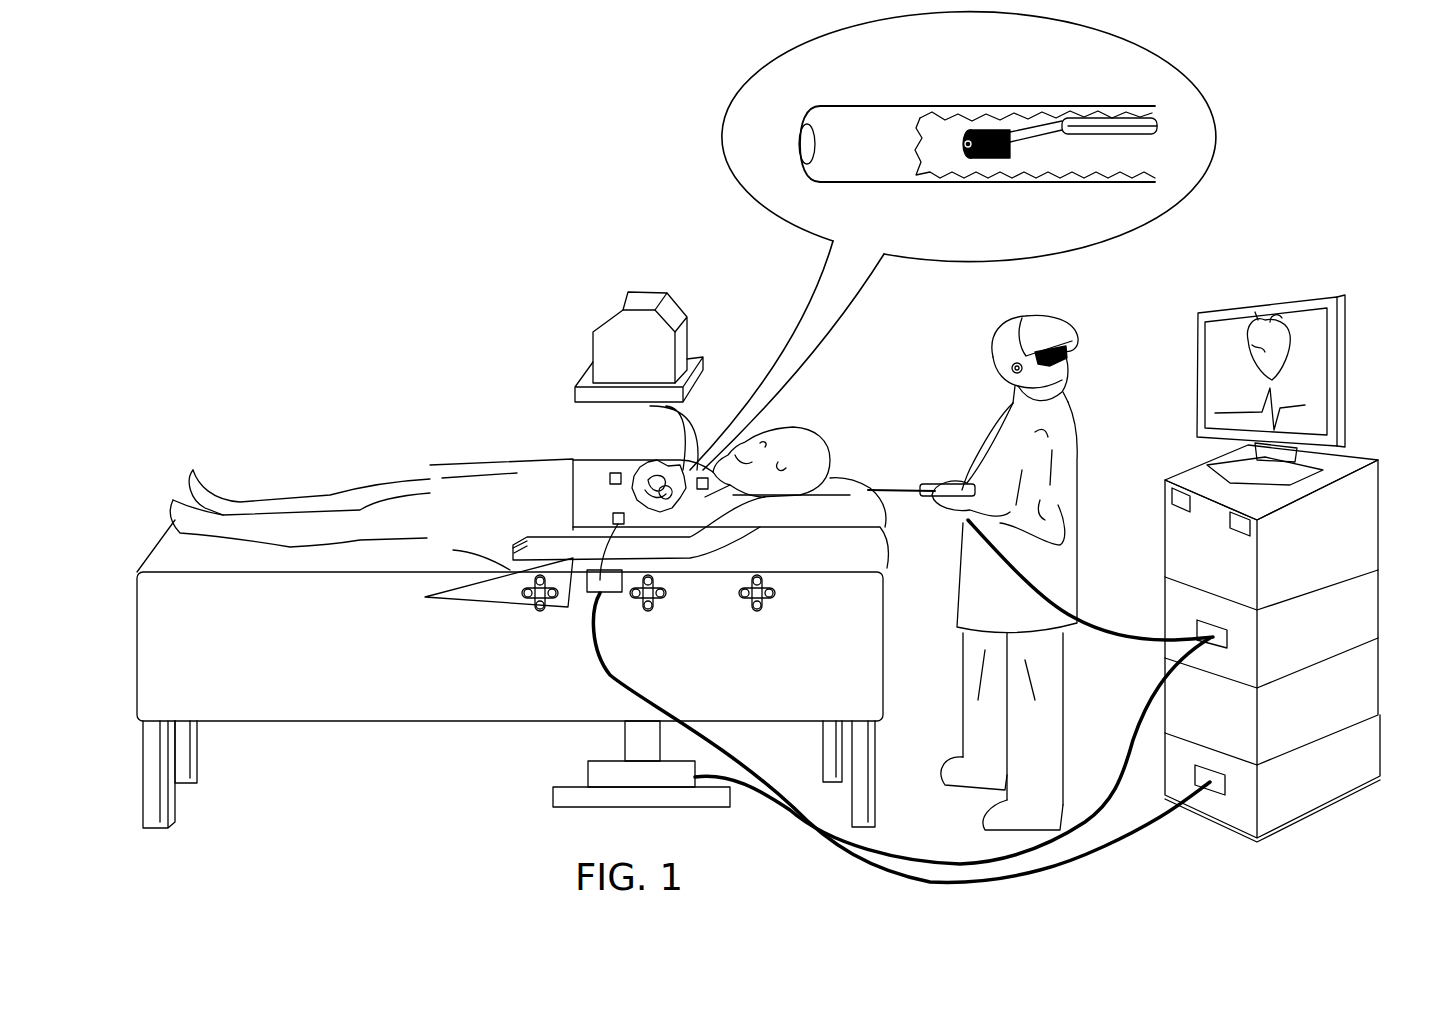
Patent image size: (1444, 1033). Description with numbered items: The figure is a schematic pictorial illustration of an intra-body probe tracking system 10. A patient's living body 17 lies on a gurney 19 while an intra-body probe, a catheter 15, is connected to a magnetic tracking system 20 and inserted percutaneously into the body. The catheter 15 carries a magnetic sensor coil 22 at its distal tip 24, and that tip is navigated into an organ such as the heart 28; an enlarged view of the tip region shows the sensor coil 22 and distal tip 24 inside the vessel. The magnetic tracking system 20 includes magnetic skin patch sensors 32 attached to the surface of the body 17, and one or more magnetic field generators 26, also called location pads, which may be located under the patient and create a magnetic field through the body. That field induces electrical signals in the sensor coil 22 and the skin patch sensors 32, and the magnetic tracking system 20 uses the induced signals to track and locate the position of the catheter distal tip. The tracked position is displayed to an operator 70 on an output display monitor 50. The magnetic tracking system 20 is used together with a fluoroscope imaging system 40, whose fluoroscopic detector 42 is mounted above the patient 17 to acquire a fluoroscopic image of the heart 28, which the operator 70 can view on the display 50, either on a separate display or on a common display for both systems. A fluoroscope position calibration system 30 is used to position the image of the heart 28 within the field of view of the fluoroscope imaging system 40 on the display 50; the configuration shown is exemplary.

The intra-body probe tracking system 10 is at (243, 251).
The catheter 15 is at (1050, 106).
The living body 17 is at (294, 500).
The gurney 19 is at (136, 620).
The magnetic tracking system 20 is at (1380, 578).
The magnetic sensor coil 22 is at (976, 128).
The distal tip 24 is at (808, 125).
The magnetic field generators 26 is at (540, 612).
The heart 28 is at (643, 465).
The fluoroscope position calibration system 30 is at (1380, 653).
The magnetic skin patch sensors 32 is at (613, 513).
The fluoroscope imaging system 40 is at (1380, 742).
The fluoroscopic detector 42 is at (593, 343).
The output display monitor 50 is at (1197, 394).
The operator 70 is at (1058, 315).